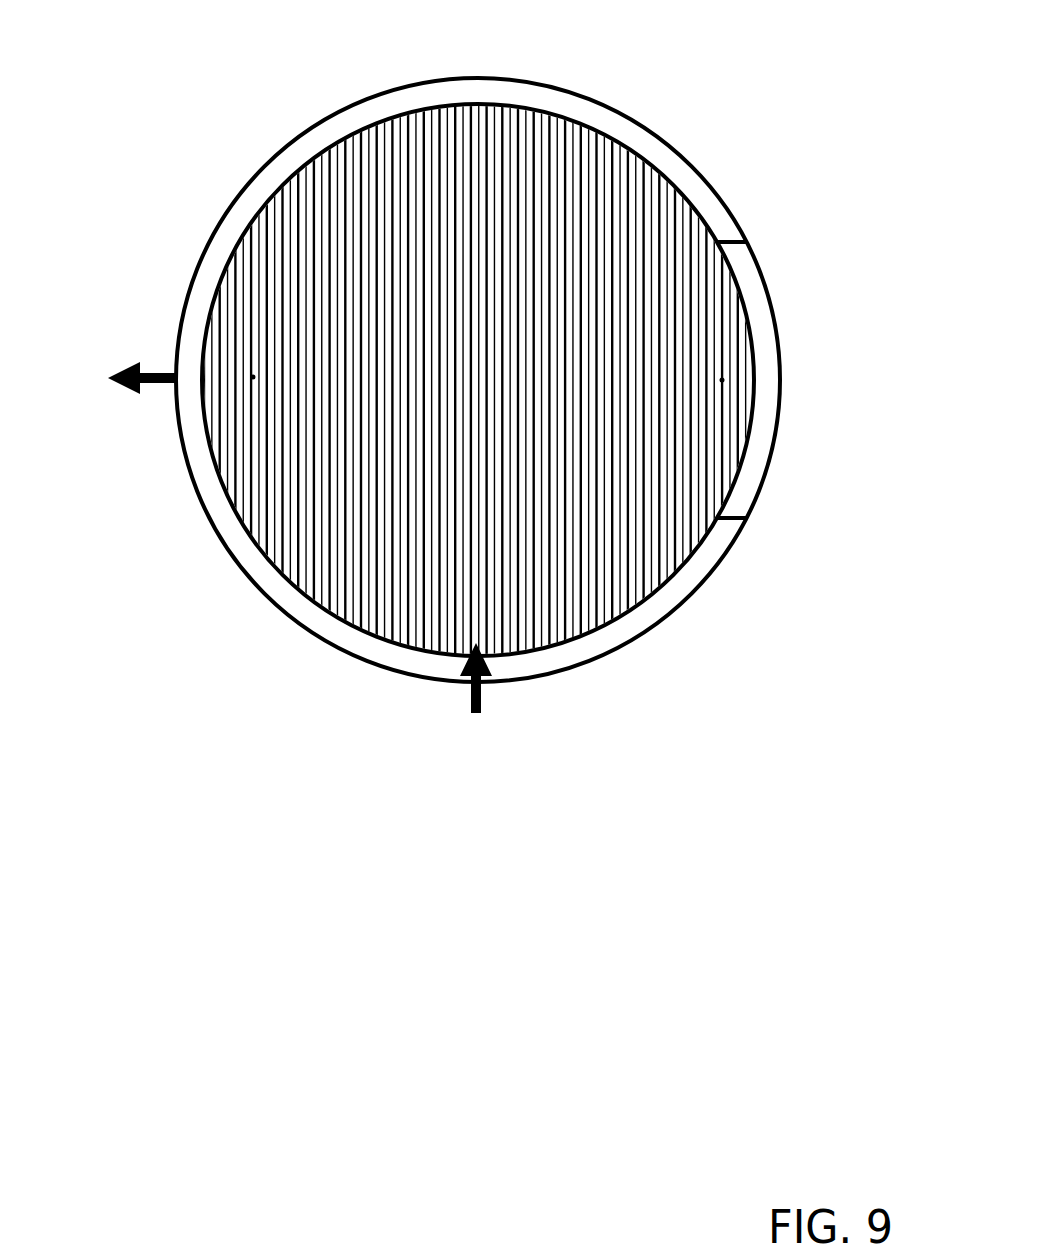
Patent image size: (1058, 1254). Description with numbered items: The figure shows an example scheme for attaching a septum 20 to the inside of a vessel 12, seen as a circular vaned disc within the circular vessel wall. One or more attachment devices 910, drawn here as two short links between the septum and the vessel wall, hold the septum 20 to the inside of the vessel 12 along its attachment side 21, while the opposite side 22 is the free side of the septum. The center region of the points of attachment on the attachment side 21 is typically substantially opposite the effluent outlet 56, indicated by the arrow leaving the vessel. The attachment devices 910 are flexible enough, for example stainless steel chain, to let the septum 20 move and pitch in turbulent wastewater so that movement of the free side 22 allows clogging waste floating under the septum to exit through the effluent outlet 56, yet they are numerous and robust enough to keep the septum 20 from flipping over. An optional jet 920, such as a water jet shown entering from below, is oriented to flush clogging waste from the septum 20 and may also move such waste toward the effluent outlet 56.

The vessel 12 is at (313, 123).
The septum 20 is at (533, 155).
The attachment side 21 is at (722, 380).
The free side 22 is at (253, 377).
The effluent outlet 56 is at (126, 368).
The attachment device 910 is at (737, 242).
The jet 920 is at (475, 715).